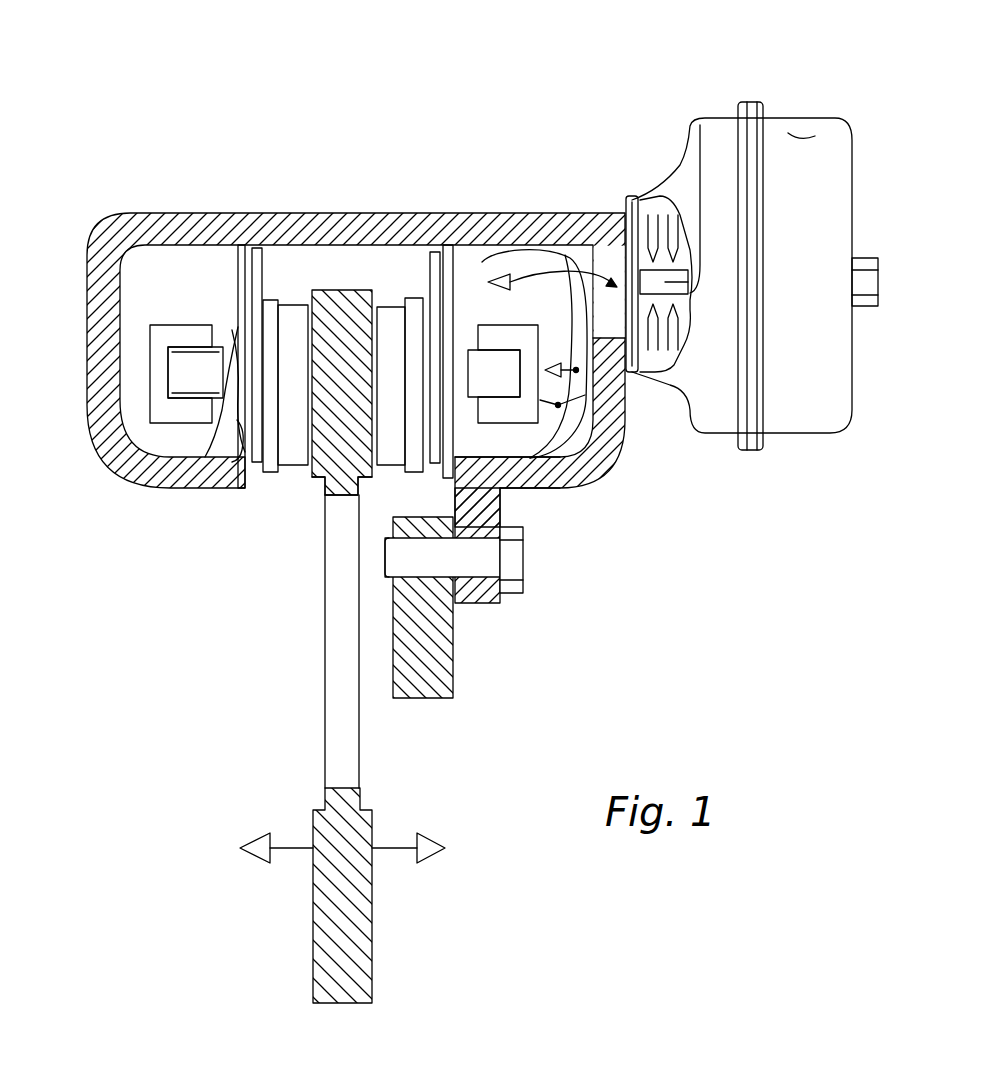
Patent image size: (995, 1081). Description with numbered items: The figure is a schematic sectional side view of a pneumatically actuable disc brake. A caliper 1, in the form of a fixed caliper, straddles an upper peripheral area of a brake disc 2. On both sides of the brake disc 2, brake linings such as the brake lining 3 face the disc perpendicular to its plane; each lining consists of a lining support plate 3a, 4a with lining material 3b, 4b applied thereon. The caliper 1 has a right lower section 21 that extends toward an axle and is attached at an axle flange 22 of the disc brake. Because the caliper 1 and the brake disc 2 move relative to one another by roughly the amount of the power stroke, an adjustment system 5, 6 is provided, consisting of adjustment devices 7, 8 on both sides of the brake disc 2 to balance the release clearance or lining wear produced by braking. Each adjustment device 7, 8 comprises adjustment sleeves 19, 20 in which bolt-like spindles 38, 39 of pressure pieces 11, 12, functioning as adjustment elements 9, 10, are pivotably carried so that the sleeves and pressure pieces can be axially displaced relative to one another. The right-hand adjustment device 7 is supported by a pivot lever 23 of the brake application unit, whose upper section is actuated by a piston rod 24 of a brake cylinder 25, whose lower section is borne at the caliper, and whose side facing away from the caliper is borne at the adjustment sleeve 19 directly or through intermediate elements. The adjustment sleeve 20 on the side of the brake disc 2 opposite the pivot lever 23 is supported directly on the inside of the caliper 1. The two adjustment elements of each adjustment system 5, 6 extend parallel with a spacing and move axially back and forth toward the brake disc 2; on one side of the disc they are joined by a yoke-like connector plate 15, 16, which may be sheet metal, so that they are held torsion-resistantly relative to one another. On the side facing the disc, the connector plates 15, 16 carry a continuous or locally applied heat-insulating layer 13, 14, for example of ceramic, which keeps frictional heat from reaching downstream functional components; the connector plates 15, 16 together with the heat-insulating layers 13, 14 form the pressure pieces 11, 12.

The caliper 1 is at (337, 300).
The brake disc 2 is at (337, 950).
The brake lining 3 is at (379, 288).
The lining support plate 3a is at (403, 300).
The lining material 3b is at (340, 483).
The lining support plate 4a is at (243, 250).
The lining material 4b is at (270, 303).
The adjustment system 5 is at (464, 318).
The adjustment system 6 is at (217, 332).
The adjustment device 7 is at (560, 250).
The adjustment device 8 is at (138, 295).
The adjustment element 9 is at (500, 422).
The adjustment element 10 is at (148, 450).
The pressure piece 11 is at (500, 500).
The pressure piece 12 is at (222, 400).
The heat-insulating layer 13 is at (433, 252).
The heat-insulating layer 14 is at (258, 465).
The connector plate 15 is at (420, 298).
The connector plate 16 is at (234, 450).
The adjustment sleeve 19 is at (510, 488).
The adjustment sleeve 20 is at (184, 420).
The right lower section 21 is at (467, 500).
The axle flange 22 is at (425, 678).
The pivot lever 23 is at (578, 250).
The piston rod 24 is at (692, 213).
The brake cylinder 25 is at (717, 147).
The spindle 38 is at (522, 302).
The spindle 39 is at (180, 380).